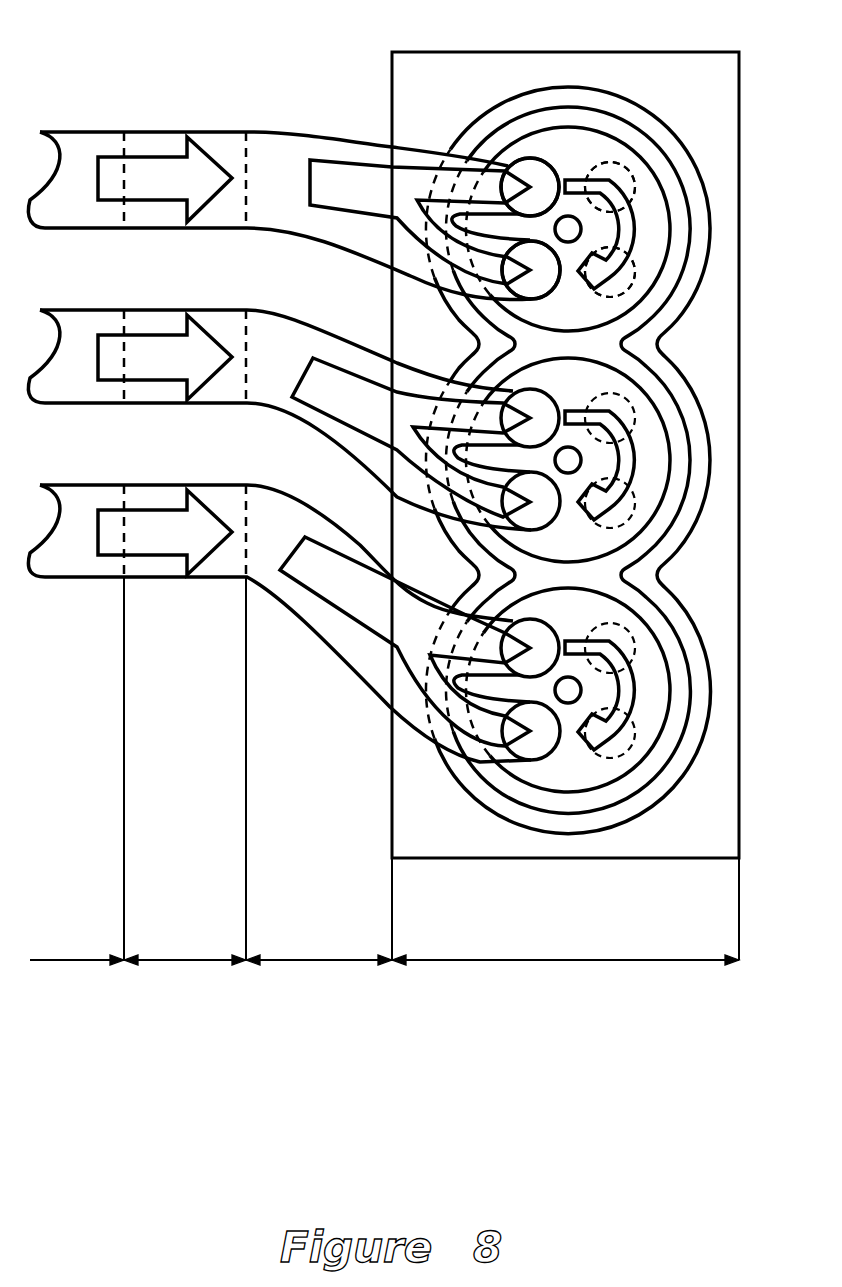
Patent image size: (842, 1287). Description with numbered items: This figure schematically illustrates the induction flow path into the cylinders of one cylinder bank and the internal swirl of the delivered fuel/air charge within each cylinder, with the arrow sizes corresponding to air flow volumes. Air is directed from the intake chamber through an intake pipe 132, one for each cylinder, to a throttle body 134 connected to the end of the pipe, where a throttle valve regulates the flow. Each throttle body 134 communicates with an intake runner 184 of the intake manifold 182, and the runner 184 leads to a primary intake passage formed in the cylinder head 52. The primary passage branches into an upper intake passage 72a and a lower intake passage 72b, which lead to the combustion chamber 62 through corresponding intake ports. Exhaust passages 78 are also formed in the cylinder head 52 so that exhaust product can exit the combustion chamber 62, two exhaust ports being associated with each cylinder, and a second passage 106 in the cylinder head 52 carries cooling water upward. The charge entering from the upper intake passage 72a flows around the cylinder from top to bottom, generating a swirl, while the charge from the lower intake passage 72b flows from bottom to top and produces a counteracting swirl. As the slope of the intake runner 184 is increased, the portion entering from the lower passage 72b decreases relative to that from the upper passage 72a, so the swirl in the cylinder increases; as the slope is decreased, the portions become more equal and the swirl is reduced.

The cylinder head 52 is at (425, 960).
The combustion chamber 62 is at (576, 150).
The upper intake passage 72a is at (537, 160).
The lower intake passage 72b is at (500, 352).
The exhaust passage 78 is at (625, 283).
The second passage 106 is at (648, 122).
The intake pipe 132 is at (62, 959).
The throttle body 134 is at (168, 963).
The intake manifold 182 is at (318, 963).
The intake runner 184 is at (280, 160).